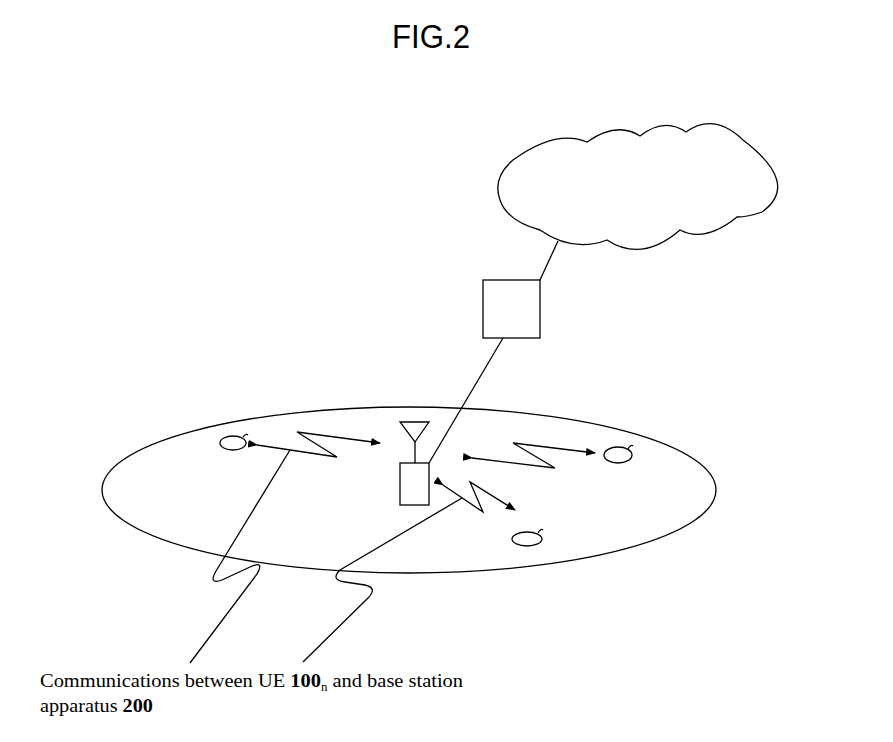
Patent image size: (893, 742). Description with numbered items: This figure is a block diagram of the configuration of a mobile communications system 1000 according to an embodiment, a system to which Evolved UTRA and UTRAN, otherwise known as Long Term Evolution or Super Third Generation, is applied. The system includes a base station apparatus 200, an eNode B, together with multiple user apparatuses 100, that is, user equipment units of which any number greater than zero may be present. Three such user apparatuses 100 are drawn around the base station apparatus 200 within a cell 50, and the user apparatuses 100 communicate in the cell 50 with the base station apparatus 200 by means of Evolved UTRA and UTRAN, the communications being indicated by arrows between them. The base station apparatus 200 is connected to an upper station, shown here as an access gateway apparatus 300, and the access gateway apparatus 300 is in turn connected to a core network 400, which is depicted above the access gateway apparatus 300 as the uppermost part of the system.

The mobile communications system 1000 is at (347, 299).
The core network 400 is at (615, 130).
The access gateway apparatus 300 is at (540, 305).
The base station apparatus 200 is at (400, 490).
The user apparatus 100 is at (237, 450).
The cell 50 is at (603, 553).